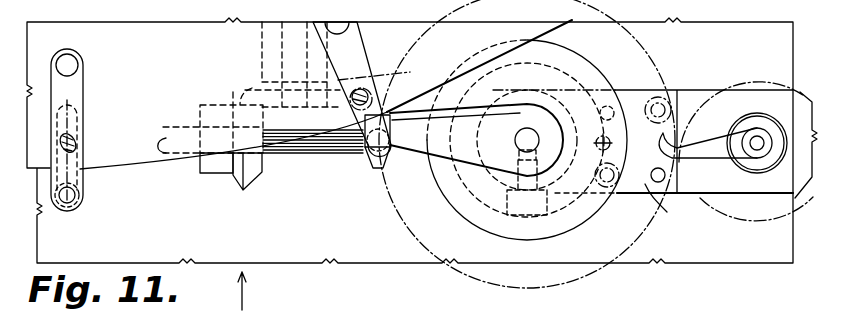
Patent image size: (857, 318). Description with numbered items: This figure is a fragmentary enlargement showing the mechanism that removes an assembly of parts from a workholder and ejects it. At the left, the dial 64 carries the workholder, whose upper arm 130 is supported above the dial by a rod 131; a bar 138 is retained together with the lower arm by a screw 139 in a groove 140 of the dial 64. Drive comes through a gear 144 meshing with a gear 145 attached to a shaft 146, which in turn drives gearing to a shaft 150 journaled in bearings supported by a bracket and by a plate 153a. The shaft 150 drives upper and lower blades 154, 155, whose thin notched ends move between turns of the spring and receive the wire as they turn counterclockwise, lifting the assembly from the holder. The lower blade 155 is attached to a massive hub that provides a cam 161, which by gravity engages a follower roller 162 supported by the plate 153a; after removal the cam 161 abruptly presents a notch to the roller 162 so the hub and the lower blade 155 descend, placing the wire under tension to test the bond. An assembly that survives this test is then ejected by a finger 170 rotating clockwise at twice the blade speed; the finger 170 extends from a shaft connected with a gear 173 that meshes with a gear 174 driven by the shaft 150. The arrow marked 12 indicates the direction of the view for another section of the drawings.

The section arrow 12 is at (254, 291).
The dial 64 is at (172, 166).
The upper arm 130 is at (88, 96).
The rod 131 is at (76, 60).
The bar 138 is at (82, 178).
The screw 139 is at (82, 132).
The groove 140 is at (84, 102).
The gear 144 is at (280, 106).
The gear 145 is at (215, 113).
The shaft 146 is at (358, 155).
The shaft 150 is at (532, 138).
The plate 153a is at (648, 205).
The upper blade 154 is at (494, 100).
The lower blade 155 is at (478, 160).
The cam 161 is at (594, 212).
The follower roller 162 is at (480, 238).
The finger 170 is at (707, 146).
The gear 173 is at (738, 220).
The gear 174 is at (590, 276).